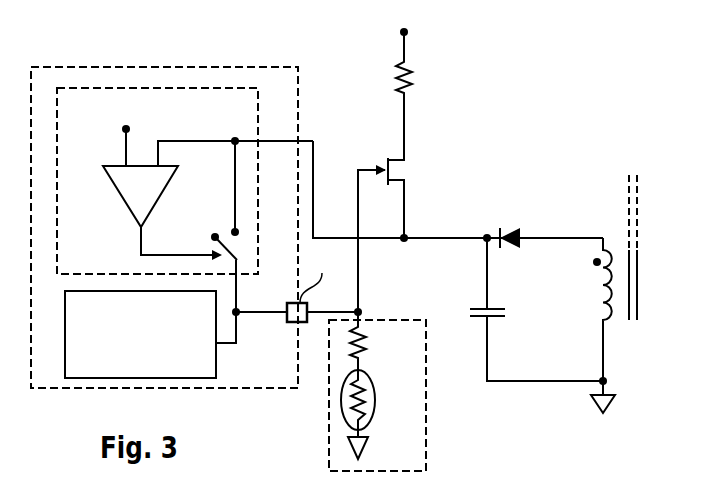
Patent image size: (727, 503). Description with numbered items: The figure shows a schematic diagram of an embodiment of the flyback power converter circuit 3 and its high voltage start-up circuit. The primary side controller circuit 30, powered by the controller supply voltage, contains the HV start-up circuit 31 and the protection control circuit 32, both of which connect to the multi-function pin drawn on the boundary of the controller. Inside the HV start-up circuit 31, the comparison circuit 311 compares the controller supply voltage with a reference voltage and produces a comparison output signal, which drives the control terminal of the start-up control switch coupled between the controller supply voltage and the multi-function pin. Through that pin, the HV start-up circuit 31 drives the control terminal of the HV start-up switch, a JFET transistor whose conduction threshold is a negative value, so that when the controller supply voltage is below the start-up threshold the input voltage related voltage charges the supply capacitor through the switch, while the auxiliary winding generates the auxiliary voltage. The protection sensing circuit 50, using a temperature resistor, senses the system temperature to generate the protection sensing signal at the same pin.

The flyback power converter circuit 3 is at (247, 40).
The primary side controller circuit 30 is at (285, 375).
The HV start-up circuit 31 is at (101, 265).
The comparison circuit 311 is at (140, 196).
The protection control circuit 32 is at (152, 371).
The protection sensing circuit 50 is at (415, 456).